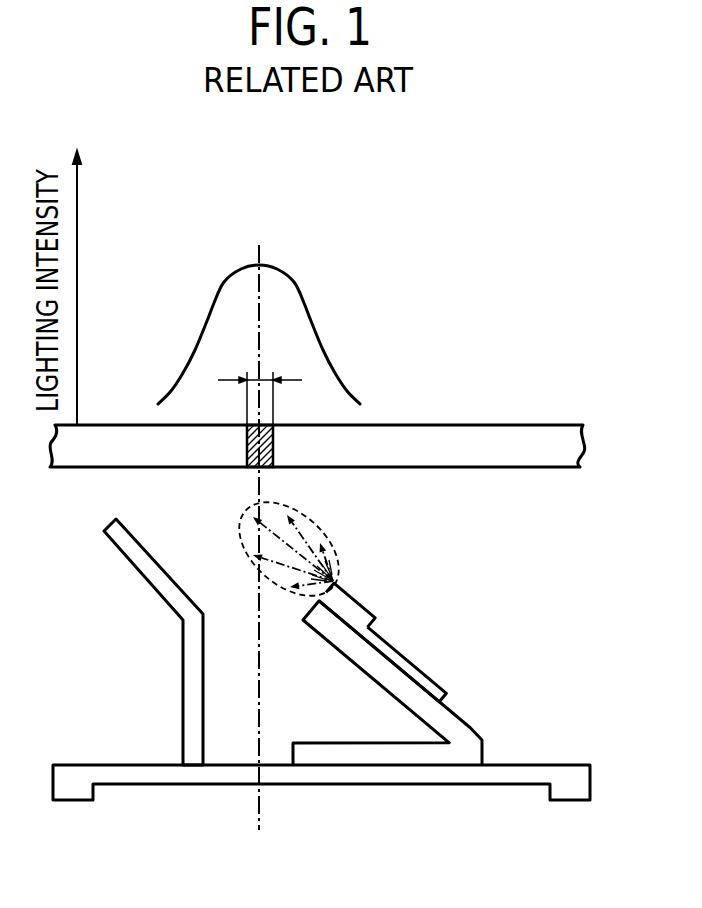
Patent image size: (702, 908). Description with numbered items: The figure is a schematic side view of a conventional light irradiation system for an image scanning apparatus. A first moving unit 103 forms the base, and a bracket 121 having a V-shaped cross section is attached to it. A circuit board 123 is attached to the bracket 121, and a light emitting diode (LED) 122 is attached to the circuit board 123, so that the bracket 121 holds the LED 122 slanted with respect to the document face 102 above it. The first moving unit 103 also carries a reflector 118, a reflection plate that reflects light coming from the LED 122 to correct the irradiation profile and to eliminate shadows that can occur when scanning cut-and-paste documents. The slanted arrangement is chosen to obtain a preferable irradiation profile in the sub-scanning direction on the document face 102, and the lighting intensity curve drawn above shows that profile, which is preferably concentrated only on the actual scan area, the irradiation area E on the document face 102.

The document face 102 is at (486, 424).
The first moving unit 103 is at (549, 764).
The reflector 118 is at (136, 568).
The bracket 121 is at (471, 726).
The light emitting diode (LED) 122 is at (361, 592).
The circuit board 123 is at (413, 662).
The irradiation area E is at (266, 378).